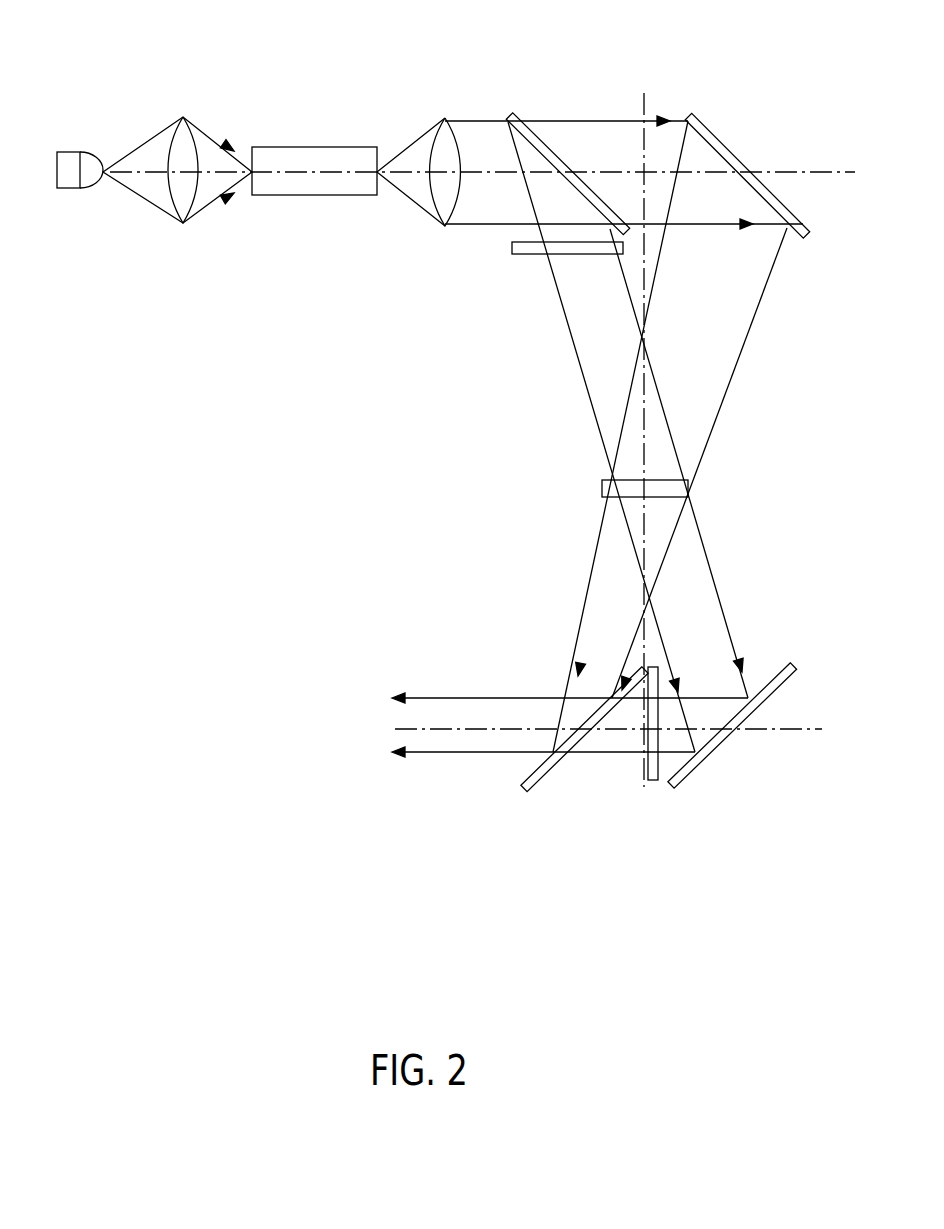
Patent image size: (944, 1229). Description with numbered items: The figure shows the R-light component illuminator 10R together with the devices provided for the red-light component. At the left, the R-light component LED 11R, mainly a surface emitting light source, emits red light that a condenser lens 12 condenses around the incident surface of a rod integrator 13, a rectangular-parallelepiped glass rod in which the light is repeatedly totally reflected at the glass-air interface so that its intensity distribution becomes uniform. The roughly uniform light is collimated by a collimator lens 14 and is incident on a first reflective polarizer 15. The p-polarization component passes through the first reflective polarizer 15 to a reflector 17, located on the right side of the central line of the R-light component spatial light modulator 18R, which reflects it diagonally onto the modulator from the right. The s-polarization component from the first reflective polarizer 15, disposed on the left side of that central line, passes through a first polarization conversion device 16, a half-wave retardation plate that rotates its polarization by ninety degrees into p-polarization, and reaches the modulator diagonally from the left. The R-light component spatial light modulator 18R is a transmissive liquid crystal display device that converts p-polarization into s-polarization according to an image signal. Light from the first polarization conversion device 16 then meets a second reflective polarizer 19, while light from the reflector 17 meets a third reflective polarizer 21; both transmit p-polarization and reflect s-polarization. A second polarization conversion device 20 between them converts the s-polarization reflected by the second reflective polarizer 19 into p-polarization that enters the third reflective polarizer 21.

The R-light component illuminator 10R is at (272, 272).
The R-light component LED 11R is at (88, 153).
The condenser lens 12 is at (183, 117).
The rod integrator 13 is at (312, 165).
The collimator lens 14 is at (445, 118).
The first reflective polarizer 15 is at (515, 113).
The first polarization conversion device 16 is at (512, 256).
The reflector 17 is at (695, 115).
The R-light component spatial light modulator 18R is at (602, 490).
The second reflective polarizer 19 is at (779, 668).
The second polarization conversion device 20 is at (657, 783).
The third reflective polarizer 21 is at (542, 782).